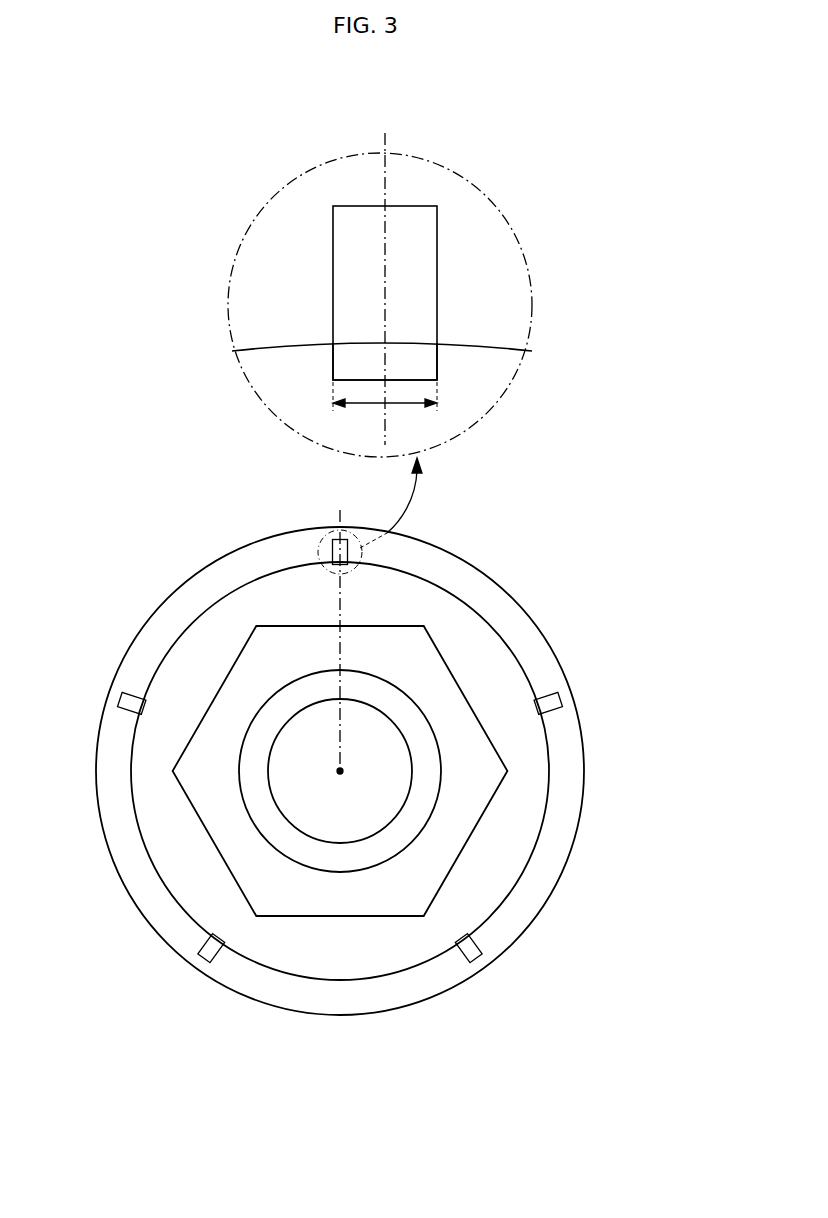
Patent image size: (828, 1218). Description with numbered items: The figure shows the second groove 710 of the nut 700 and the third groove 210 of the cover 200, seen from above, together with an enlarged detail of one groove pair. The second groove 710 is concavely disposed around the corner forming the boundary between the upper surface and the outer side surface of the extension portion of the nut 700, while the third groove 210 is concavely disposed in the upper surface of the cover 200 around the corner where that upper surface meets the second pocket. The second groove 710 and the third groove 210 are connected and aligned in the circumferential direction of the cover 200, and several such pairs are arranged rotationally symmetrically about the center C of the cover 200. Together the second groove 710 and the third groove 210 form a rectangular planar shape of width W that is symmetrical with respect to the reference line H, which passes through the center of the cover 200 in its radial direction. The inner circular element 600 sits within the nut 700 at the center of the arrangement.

The cover 200 is at (422, 186).
The third groove 210 is at (333, 233).
The shaft 600 is at (421, 752).
The nut 700 is at (447, 365).
The second groove 710 is at (333, 367).
The reference line H is at (340, 612).
The width of protrusion W is at (385, 408).
The center C is at (340, 771).